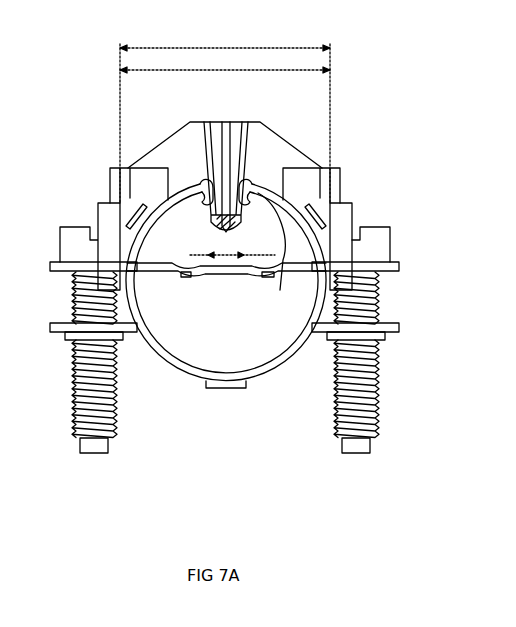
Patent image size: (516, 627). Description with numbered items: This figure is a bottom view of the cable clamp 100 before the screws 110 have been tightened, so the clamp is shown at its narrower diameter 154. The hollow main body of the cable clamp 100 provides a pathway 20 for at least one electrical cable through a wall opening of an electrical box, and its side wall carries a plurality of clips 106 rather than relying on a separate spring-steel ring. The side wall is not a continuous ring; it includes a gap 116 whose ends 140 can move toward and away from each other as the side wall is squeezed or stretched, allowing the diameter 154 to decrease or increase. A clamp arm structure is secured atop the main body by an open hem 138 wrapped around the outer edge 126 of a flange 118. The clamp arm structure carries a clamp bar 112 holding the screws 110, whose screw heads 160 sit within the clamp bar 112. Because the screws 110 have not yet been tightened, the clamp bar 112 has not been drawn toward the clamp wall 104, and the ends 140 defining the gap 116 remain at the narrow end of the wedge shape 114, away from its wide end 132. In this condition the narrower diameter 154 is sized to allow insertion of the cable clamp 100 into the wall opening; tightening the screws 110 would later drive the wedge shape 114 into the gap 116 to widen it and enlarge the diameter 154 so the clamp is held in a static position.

The cable clamp 100 is at (66, 136).
The pathway 20 is at (210, 313).
The clamp wall 104 is at (276, 384).
The clips 106 is at (128, 167).
The screws 110 is at (378, 420).
The clamp bar 112 is at (162, 265).
The wedge shape 114 is at (223, 130).
The gap 116 is at (232, 247).
The flange 118 is at (113, 187).
The outer edge 126 is at (343, 203).
The wide end 132 is at (220, 133).
The open hem 138 is at (348, 205).
The ends 140 is at (175, 207).
The diameter 154 is at (225, 115).
The screw heads 160 is at (367, 253).